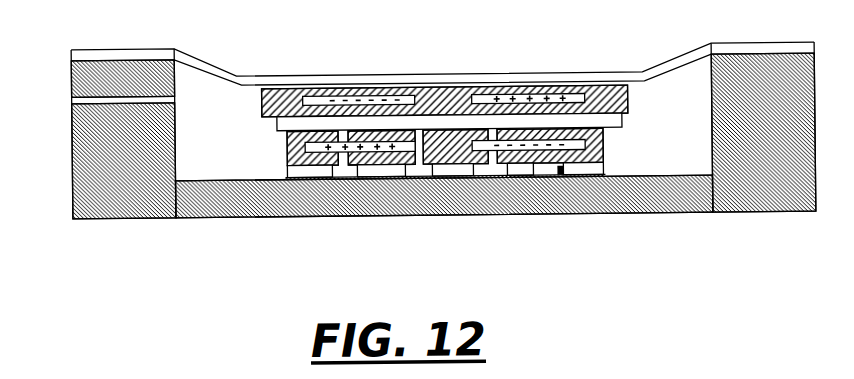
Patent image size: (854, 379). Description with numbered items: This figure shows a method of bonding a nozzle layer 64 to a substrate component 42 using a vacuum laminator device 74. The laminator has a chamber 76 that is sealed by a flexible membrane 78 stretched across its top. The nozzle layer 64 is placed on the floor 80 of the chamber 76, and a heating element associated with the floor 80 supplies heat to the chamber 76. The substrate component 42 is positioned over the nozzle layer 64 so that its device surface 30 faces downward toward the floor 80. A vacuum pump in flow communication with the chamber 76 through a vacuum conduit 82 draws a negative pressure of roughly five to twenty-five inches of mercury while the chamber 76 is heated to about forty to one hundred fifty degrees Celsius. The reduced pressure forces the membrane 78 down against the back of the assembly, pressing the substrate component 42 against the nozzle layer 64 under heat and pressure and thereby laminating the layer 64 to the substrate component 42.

The device surface 30 is at (562, 174).
The substrate component 42 is at (280, 130).
The nozzle layer 64 is at (304, 177).
The vacuum laminator device 74 is at (151, 229).
The chamber 76 is at (198, 97).
The flexible membrane 78 is at (673, 62).
The floor 80 is at (355, 199).
The vacuum conduit 82 is at (84, 97).